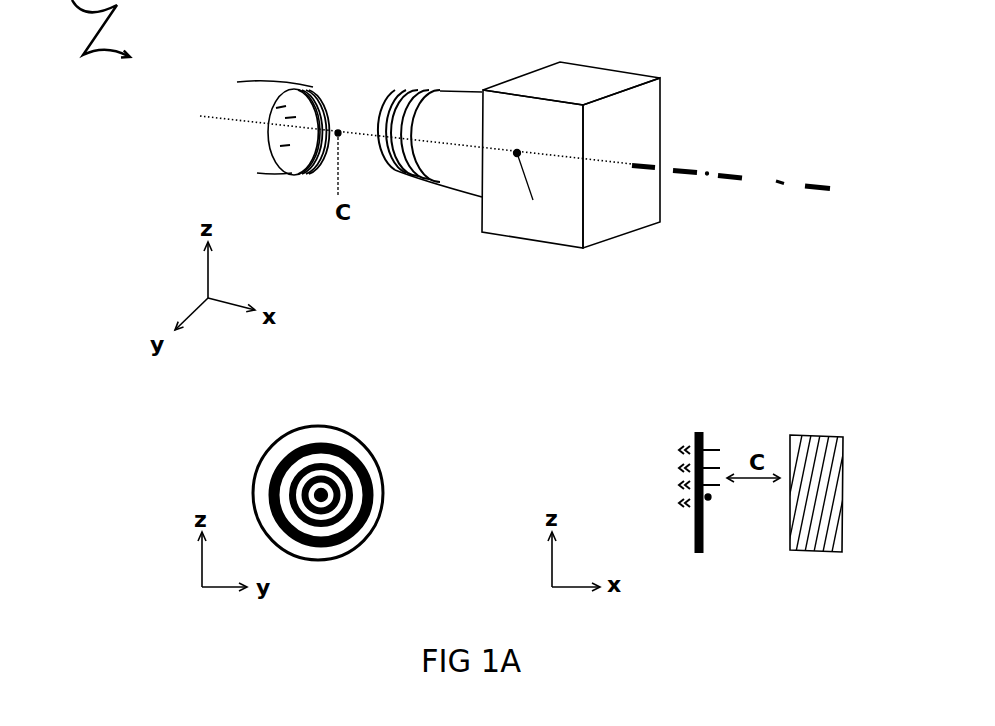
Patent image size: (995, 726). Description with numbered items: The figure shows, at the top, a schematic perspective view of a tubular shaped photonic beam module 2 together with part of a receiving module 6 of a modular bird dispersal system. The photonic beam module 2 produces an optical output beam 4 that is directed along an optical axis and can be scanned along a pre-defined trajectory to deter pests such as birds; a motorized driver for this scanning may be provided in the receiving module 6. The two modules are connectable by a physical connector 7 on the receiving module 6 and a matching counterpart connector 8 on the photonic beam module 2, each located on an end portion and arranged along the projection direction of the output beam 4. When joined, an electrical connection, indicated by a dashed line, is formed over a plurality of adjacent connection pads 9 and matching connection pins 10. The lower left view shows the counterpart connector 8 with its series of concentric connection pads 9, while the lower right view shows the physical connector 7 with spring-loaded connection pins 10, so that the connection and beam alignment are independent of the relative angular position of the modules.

The photonic beam module 2 is at (682, 60).
The optical output beam 4 is at (771, 176).
The receiving module 6 is at (233, 90).
The physical connector 7 is at (327, 90).
The matching counterpart connector 8 is at (402, 108).
The connection pads 9 is at (367, 495).
The connection pins 10 is at (708, 497).